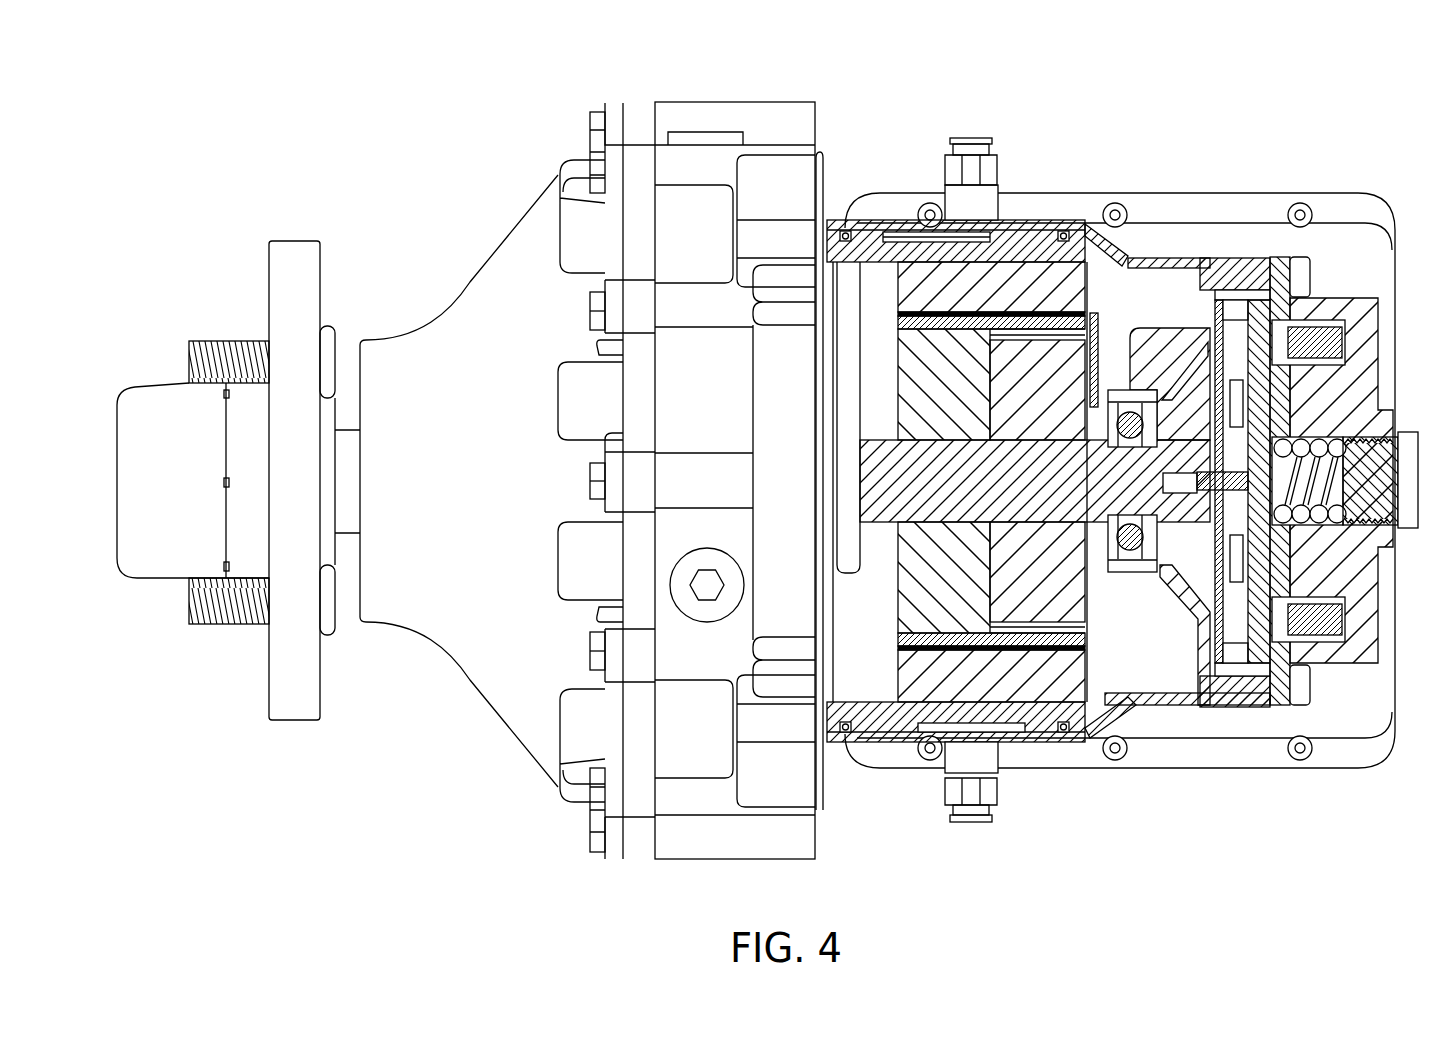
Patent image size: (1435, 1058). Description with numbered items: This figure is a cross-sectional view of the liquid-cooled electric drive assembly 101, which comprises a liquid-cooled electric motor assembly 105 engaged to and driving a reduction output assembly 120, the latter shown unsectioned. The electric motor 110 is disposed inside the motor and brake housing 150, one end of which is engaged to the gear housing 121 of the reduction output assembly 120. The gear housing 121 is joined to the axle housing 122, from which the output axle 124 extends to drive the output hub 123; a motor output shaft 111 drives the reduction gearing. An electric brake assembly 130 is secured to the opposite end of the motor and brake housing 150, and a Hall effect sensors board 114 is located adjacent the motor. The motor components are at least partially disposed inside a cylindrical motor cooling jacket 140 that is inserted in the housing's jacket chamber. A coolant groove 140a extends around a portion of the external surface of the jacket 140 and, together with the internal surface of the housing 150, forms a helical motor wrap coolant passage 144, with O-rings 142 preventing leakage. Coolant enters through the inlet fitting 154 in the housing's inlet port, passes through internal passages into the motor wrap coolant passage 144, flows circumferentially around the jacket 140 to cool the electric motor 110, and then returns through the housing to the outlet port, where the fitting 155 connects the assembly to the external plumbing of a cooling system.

The liquid-cooled electric drive assembly 101 is at (282, 106).
The liquid-cooled electric motor assembly 105 is at (1157, 118).
The electric motor 110 is at (1115, 607).
The motor output shaft 111 is at (893, 472).
The Hall effect sensors board 114 is at (1098, 334).
The reduction output assembly 120 is at (446, 210).
The gear housing 121 is at (724, 397).
The axle housing 122 is at (492, 444).
The output hub 123 is at (292, 240).
The output axle 124 is at (347, 443).
The electric brake assembly 130 is at (1327, 682).
The motor cooling jacket 140 is at (856, 262).
The coolant groove 140a is at (895, 237).
The O-rings 142 is at (847, 232).
The motor wrap coolant passage 144 is at (955, 238).
The motor and brake housing 150 is at (1228, 258).
The inlet fitting 154 is at (972, 822).
The fitting 155 is at (978, 140).